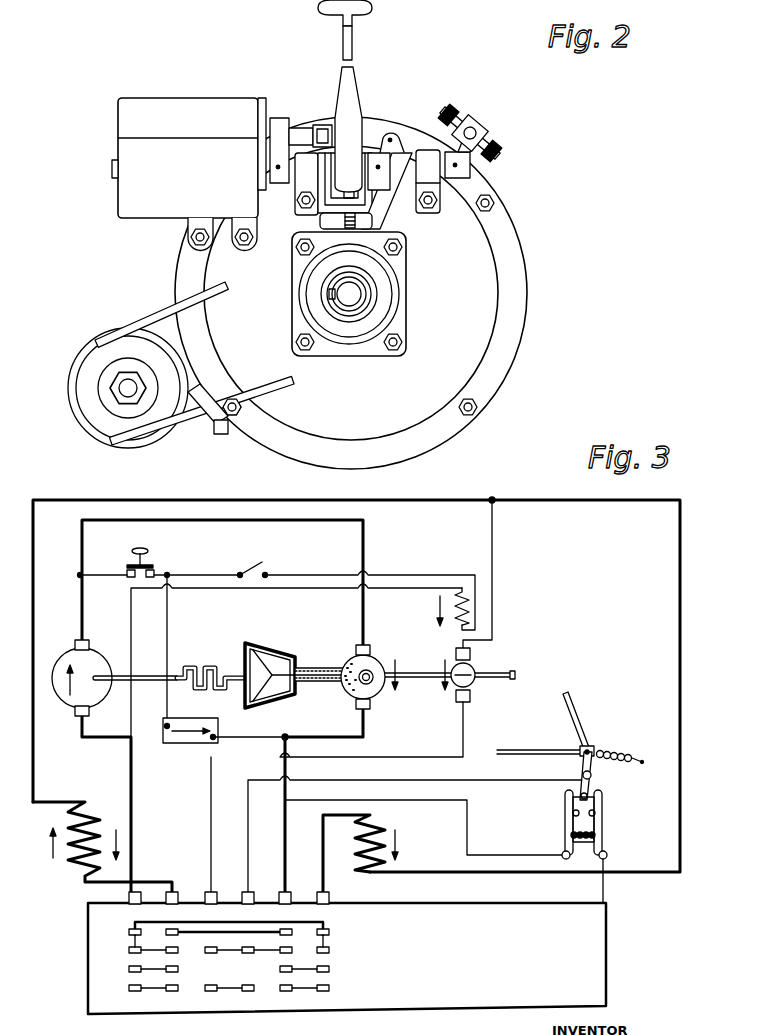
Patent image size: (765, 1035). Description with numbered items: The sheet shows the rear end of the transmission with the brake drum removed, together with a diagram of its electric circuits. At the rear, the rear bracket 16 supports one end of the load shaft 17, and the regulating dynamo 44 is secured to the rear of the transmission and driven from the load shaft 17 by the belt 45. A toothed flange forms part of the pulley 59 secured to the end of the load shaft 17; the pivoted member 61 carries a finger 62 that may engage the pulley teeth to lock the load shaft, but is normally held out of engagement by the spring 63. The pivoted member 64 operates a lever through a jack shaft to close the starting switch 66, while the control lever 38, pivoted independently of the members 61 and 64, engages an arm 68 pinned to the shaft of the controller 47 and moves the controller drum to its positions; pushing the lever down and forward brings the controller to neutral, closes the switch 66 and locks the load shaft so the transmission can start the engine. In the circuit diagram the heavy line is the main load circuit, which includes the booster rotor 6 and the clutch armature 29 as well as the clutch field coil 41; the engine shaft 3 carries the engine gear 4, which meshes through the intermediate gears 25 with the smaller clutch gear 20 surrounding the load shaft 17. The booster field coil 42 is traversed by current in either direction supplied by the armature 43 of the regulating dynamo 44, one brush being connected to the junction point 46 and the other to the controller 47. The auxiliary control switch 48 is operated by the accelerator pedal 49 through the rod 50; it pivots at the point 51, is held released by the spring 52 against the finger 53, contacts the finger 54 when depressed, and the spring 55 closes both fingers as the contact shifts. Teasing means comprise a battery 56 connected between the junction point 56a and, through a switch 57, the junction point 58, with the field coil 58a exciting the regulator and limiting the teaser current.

In FIG. 2, the rear bracket 16 is at (512, 345).
In FIG. 2, the control lever 38 is at (352, 52).
In FIG. 2, the regulating dynamo 44 is at (87, 405).
In FIG. 2, the belt 45 is at (198, 414).
In FIG. 2, the controller 47 is at (166, 207).
In FIG. 3, the controller 47 is at (130, 958).
In FIG. 2, the pulley 59 is at (133, 417).
In FIG. 2, the pivoted member 61 is at (398, 188).
In FIG. 2, the finger 62 is at (356, 220).
In FIG. 2, the spring 63 is at (466, 174).
In FIG. 2, the pivoted member 64 is at (377, 178).
In FIG. 2, the starting switch 66 is at (472, 128).
In FIG. 3, the starting switch 66 is at (150, 567).
In FIG. 2, the arm 68 is at (277, 122).
In FIG. 3, the shaft 3 is at (205, 683).
In FIG. 3, the engine gear 4 is at (243, 658).
In FIG. 3, the rotor 6 is at (62, 692).
In FIG. 3, the load shaft 17 is at (500, 675).
In FIG. 3, the clutch gear 20 is at (305, 668).
In FIG. 3, the intermediate gears 25 is at (262, 652).
In FIG. 3, the clutch armature 29 is at (375, 660).
In FIG. 3, the clutch field coil 41 is at (388, 828).
In FIG. 3, the booster field coil 42 is at (75, 866).
In FIG. 3, the armature 43 is at (473, 683).
In FIG. 3, the junction point 46 is at (497, 503).
In FIG. 3, the auxiliary control switch 48 is at (573, 780).
In FIG. 3, the accelerator pedal 49 is at (578, 718).
In FIG. 3, the rod 50 is at (520, 752).
In FIG. 3, the pivot point 51 is at (593, 776).
In FIG. 3, the spring 52 is at (612, 754).
In FIG. 3, the finger 53 is at (563, 806).
In FIG. 3, the finger 54 is at (600, 818).
In FIG. 3, the spring 55 is at (585, 842).
In FIG. 3, the battery 56 is at (185, 745).
In FIG. 3, the junction point 56a is at (285, 737).
In FIG. 3, the switch 57 is at (255, 571).
In FIG. 3, the junction point 58 is at (130, 735).
In FIG. 3, the field coil 58a is at (470, 608).